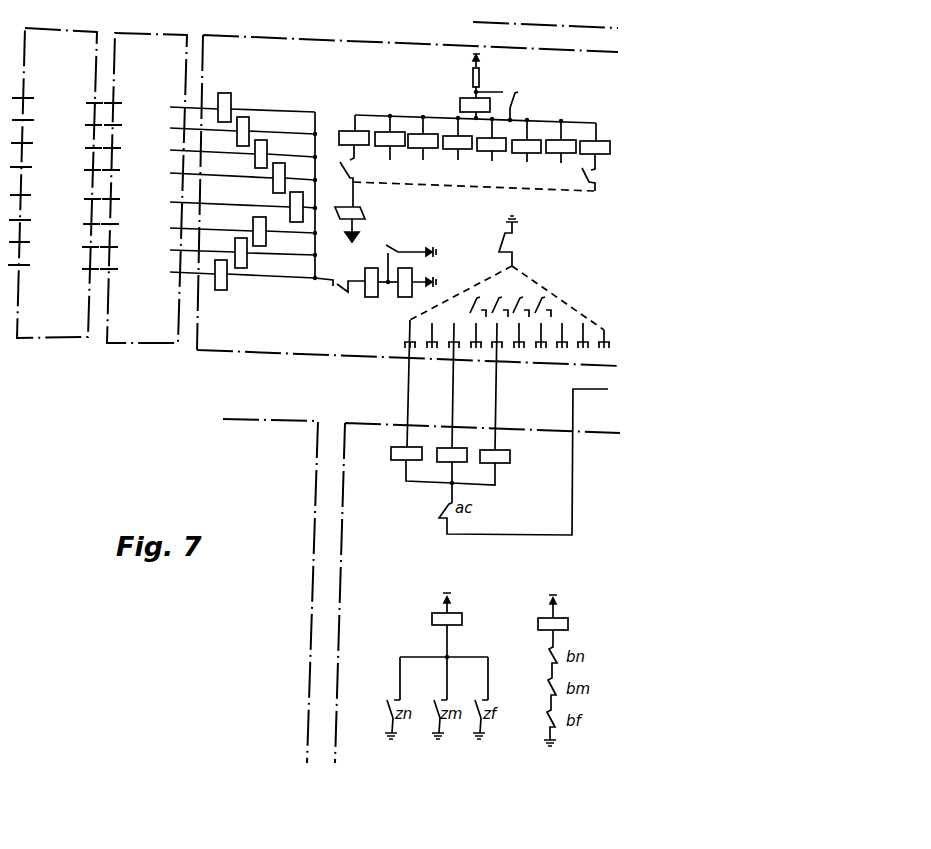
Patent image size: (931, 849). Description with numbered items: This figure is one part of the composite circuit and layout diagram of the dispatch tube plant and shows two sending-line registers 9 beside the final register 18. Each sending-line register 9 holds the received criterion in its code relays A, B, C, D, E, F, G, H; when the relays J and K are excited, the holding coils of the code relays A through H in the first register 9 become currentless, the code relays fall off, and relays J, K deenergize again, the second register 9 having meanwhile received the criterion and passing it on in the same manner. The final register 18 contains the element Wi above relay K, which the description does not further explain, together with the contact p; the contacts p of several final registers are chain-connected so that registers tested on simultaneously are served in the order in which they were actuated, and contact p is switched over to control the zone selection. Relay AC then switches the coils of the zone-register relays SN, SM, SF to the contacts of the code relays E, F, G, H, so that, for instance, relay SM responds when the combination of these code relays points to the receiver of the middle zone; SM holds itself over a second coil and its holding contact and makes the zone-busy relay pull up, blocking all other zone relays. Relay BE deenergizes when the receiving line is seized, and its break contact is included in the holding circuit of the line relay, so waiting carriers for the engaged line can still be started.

The sending-line register 9 is at (97, 185).
The final register 18 is at (395, 236).
The code relay A is at (231, 105).
The code relay B is at (249, 128).
The code relay C is at (268, 151).
The code relay D is at (287, 175).
The code relay E is at (291, 208).
The code relay F is at (252, 228).
The code relay G is at (249, 254).
The code relay H is at (228, 276).
The resistor Wi is at (488, 73).
The relay K is at (473, 105).
The contact p is at (345, 222).
The relay J is at (388, 290).
The zone-register relay SN is at (411, 463).
The zone-register relay SM is at (456, 464).
The zone-register relay SF is at (499, 465).
The relay AC is at (459, 610).
The relay BE is at (565, 613).